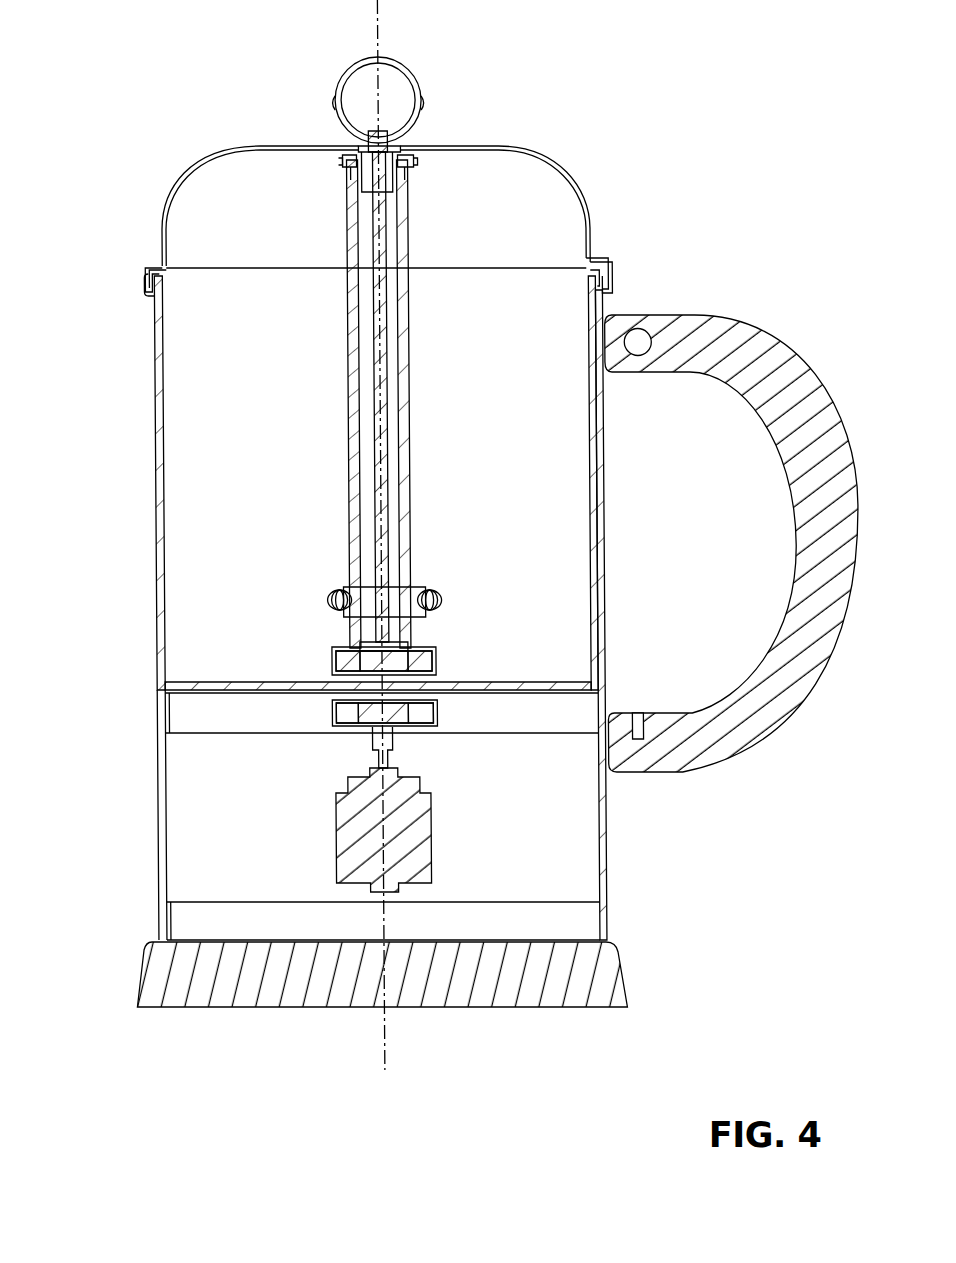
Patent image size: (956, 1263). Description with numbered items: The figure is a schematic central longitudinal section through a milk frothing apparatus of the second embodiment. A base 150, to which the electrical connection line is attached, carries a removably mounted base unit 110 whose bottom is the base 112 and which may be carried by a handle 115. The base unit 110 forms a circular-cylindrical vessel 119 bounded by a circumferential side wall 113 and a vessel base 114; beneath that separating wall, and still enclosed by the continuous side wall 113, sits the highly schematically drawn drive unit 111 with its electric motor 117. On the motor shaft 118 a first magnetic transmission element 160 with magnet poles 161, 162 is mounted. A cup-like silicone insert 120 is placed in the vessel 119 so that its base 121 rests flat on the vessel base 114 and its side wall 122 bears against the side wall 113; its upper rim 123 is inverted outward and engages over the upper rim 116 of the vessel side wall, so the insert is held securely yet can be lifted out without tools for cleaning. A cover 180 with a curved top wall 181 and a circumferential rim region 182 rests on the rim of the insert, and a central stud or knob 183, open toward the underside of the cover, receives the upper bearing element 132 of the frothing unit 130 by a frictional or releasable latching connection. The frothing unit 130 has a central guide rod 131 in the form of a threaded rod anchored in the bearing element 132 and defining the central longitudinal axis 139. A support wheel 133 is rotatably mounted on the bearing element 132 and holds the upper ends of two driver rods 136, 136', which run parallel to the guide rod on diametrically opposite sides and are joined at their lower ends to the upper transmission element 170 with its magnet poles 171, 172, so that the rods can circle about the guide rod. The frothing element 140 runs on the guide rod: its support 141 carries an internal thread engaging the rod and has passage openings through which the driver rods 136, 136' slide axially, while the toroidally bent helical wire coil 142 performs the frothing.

The base unit 110 is at (620, 849).
The drive unit 111 is at (211, 844).
The base 112 is at (174, 917).
The side wall 113 is at (160, 768).
The vessel base 114 is at (175, 718).
The handle 115 is at (717, 744).
The upper rim of the vessel side wall 116 is at (148, 290).
The electric motor 117 is at (440, 862).
The motor shaft 118 is at (376, 756).
The vessel 119 is at (497, 434).
The silicone insert 120 is at (188, 528).
The base of the silicone insert 121 is at (215, 684).
The side wall of the silicone insert 122 is at (166, 598).
The upper rim of the silicone insert 123 is at (152, 266).
The frothing unit 130 is at (290, 330).
The guide rod 131 is at (378, 362).
The upper bearing element 132 is at (390, 158).
The support wheel 133 is at (402, 176).
The driver rod 136 is at (305, 404).
The driver rod 136' is at (453, 404).
The central longitudinal axis 139 is at (376, 8).
The frothing element 140 is at (440, 598).
The support 141 is at (422, 588).
The helical wire coil 142 is at (333, 596).
The base 150 is at (625, 965).
The first magnetic transmission element 160 is at (426, 730).
The magnet pole 161 is at (340, 712).
The magnet pole 162 is at (433, 712).
The upper transmission element 170 is at (413, 648).
The magnet pole 171 is at (342, 660).
The magnet pole 172 is at (426, 668).
The cover 180 is at (596, 132).
The top wall 181 is at (592, 200).
The rim region 182 is at (612, 272).
The stud or knob 183 is at (408, 72).